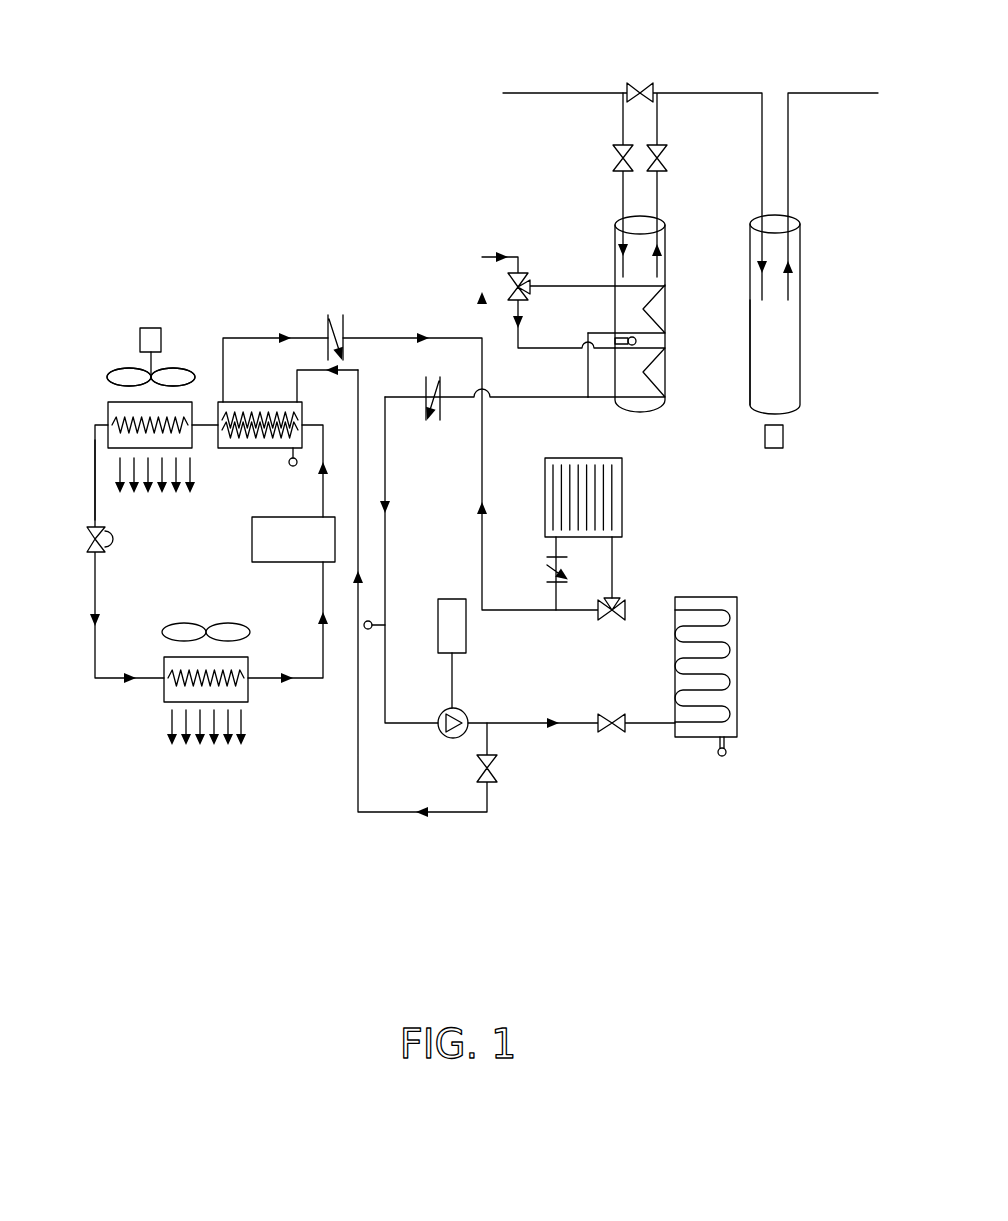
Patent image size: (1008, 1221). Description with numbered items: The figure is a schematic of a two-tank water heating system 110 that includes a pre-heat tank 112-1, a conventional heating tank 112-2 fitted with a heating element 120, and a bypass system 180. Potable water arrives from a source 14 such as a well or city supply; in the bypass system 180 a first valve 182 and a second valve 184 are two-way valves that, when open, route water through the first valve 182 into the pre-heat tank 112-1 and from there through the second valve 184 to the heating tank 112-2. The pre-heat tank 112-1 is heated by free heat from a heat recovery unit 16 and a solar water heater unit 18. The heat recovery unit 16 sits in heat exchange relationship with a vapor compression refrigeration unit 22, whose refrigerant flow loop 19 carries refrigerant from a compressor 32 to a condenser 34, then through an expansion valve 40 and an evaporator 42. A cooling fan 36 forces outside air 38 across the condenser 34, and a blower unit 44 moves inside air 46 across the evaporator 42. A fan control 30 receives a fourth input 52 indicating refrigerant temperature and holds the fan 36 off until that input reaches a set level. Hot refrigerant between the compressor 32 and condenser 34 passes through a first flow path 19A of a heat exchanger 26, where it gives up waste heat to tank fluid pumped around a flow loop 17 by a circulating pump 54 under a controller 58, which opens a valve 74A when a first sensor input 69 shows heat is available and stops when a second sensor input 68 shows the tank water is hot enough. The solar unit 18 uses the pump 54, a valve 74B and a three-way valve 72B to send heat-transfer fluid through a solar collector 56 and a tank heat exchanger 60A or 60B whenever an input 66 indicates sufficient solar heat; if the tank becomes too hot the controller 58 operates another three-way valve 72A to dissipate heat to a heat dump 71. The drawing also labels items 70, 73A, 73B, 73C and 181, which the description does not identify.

The source of potable water 14 is at (512, 93).
The heat recovery unit 16 is at (266, 463).
The flow loop 17 is at (245, 335).
The solar water heater unit 18 is at (648, 820).
The flow loop 19 is at (93, 477).
The first flow path 19A is at (303, 424).
The vapor compression refrigeration unit 22 is at (105, 705).
The heat exchanger 26 is at (230, 438).
The fan control 30 is at (150, 328).
The compressor 32 is at (293, 539).
The condenser 34 is at (108, 410).
The cooling fan 36 is at (172, 370).
The outside air 38 is at (188, 490).
The expansion valve 40 is at (108, 548).
The evaporator 42 is at (250, 703).
The blower unit 44 is at (232, 622).
The inside air 46 is at (170, 722).
The fourth input 52 is at (116, 340).
The circulating pump 54 is at (445, 738).
The solar collector 56 is at (738, 700).
The controller 58 is at (452, 653).
The heat exchanger 60A is at (667, 350).
The heat exchanger 60B is at (667, 332).
The input 66 is at (725, 757).
The second sensor input 68 is at (612, 333).
The first sensor input 69 is at (292, 470).
The temperature sensor 70 is at (380, 625).
The heat dump 71 is at (622, 492).
The 3-way valve 72A is at (618, 622).
The three-way valve 72B is at (522, 272).
The flow restrictor 73A is at (548, 563).
The flow restrictor 73B is at (441, 418).
The flow restrictor 73C is at (345, 315).
The valve 74A is at (497, 765).
The valve 74B is at (616, 732).
The water heating system 110 is at (814, 289).
The pre-heat tank 112-1 is at (667, 303).
The conventional heating tank 112-2 is at (802, 355).
The heating element 120 is at (775, 448).
The bypass system 180 is at (678, 126).
The valve 181 is at (650, 83).
The first valve 182 is at (613, 163).
The second valve 184 is at (667, 160).